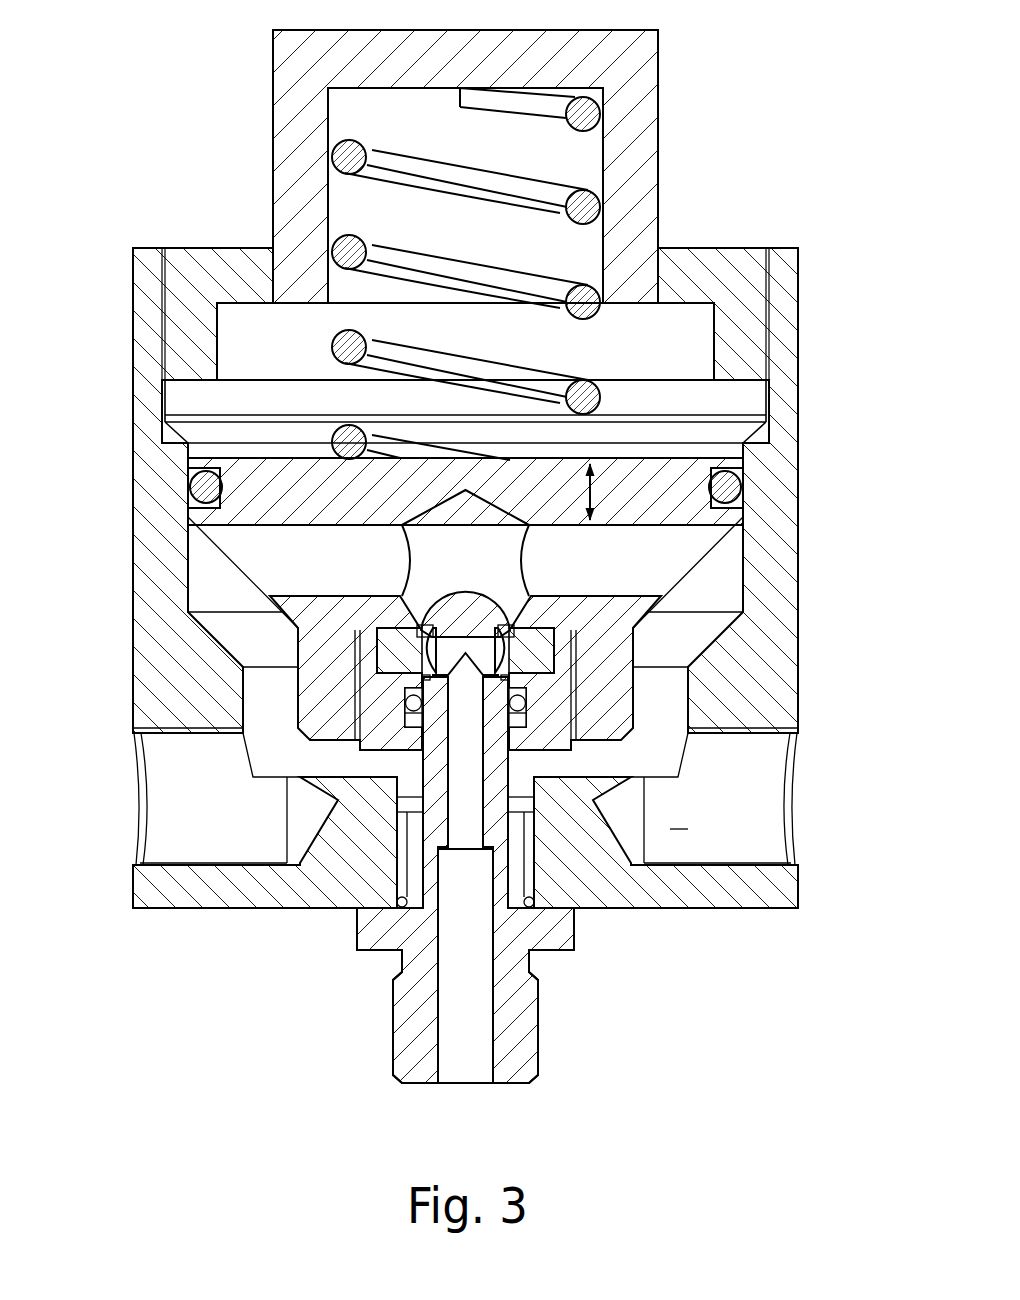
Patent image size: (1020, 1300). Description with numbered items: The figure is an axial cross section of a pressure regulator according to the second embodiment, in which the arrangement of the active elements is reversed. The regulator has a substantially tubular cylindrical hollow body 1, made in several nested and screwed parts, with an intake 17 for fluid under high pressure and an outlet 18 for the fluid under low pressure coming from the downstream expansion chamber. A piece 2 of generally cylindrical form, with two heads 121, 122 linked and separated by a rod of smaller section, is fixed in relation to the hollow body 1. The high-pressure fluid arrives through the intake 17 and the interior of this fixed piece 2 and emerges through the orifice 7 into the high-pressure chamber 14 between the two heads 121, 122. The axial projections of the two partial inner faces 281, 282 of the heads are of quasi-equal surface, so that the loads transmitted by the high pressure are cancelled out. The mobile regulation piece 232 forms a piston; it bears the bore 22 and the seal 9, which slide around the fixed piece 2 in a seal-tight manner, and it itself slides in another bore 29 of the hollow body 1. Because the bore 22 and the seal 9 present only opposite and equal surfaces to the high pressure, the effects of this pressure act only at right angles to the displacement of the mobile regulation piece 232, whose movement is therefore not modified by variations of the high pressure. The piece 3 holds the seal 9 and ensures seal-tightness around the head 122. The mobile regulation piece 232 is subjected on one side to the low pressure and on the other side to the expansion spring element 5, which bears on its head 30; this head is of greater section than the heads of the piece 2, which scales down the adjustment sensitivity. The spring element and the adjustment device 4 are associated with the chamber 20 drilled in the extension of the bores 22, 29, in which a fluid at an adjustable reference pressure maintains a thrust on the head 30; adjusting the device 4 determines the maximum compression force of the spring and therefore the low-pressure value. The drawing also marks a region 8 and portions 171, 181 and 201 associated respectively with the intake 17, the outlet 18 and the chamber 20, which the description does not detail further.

The hollow body 1 is at (765, 440).
The piece of generally cylindrical form with two heads 2 is at (492, 725).
The piece holding the seal 3 is at (539, 742).
The adjustment device 4 is at (622, 100).
The expansion spring element 5 is at (590, 207).
The orifice 7 is at (460, 1017).
The chamber 8 is at (679, 813).
The seal 9 is at (540, 642).
The high-pressure chamber 14 is at (420, 640).
The intake 17 is at (462, 1064).
The inlet nozzle 171 is at (541, 1047).
The outlet 18 is at (760, 785).
The outlet housing wall 181 is at (746, 868).
The chamber 20 is at (613, 360).
The sleeve 201 is at (775, 290).
The bore 22 is at (522, 681).
The mobile regulation piece 232 is at (265, 492).
The bore 29 is at (750, 508).
The head of the mobile regulation piece 30 is at (297, 477).
The head 121 is at (462, 619).
The head 122 is at (434, 786).
The partial inner face 281 is at (430, 658).
The partial inner face 282 is at (420, 688).